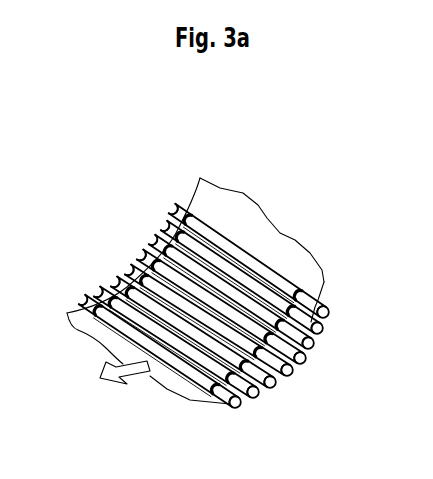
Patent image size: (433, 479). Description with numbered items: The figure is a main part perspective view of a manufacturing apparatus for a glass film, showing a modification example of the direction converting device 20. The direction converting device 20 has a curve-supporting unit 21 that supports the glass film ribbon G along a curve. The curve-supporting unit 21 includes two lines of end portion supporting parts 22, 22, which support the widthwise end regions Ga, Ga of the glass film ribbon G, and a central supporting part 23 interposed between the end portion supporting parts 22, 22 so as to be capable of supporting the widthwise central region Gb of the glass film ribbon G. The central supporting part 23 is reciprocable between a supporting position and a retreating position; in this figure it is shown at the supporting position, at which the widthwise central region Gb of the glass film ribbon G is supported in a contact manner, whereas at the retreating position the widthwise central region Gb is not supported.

The direction converting device 20 is at (225, 296).
The curve-supporting unit 21 is at (334, 342).
The end portion supporting parts 22 is at (92, 280).
The central supporting part 23 is at (177, 364).
The glass film ribbon G is at (207, 266).
The widthwise end regions Ga is at (205, 193).
The widthwise central region Gb is at (253, 241).